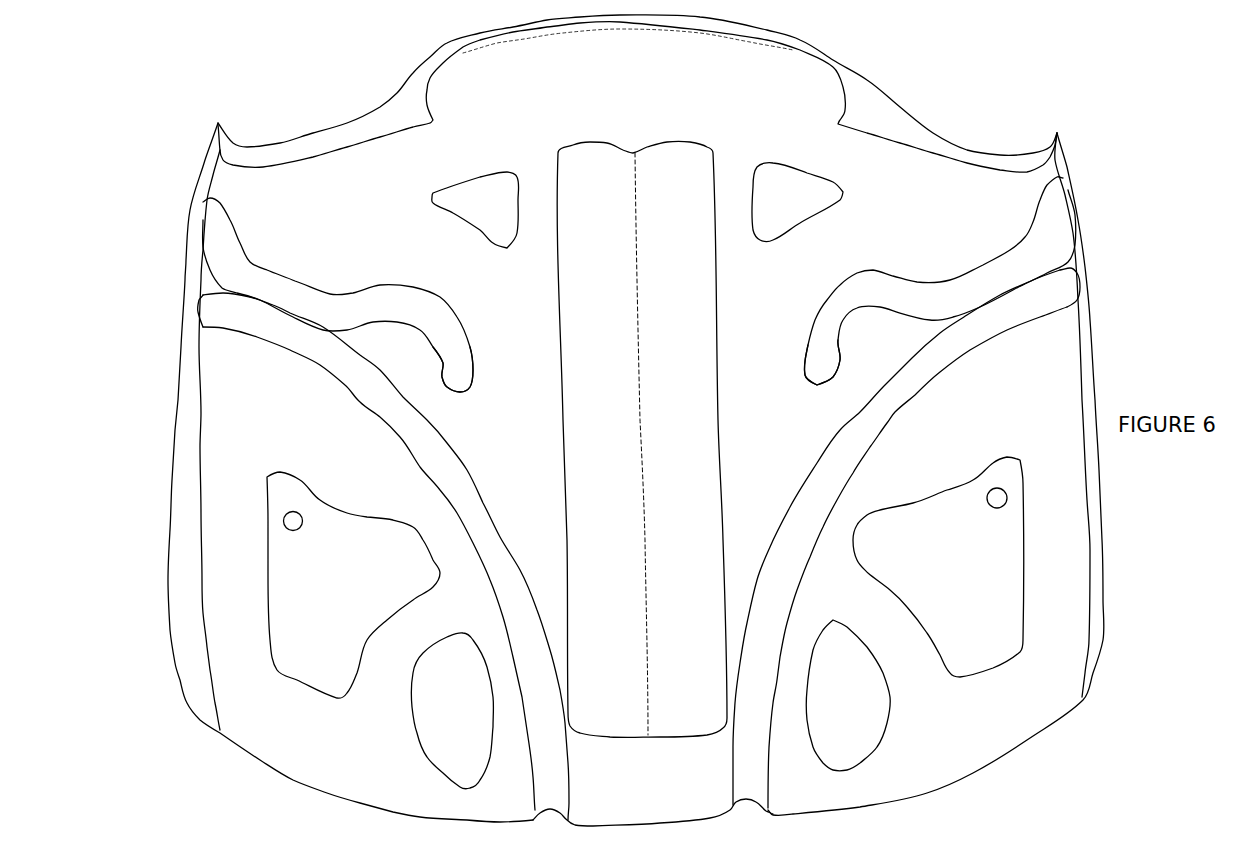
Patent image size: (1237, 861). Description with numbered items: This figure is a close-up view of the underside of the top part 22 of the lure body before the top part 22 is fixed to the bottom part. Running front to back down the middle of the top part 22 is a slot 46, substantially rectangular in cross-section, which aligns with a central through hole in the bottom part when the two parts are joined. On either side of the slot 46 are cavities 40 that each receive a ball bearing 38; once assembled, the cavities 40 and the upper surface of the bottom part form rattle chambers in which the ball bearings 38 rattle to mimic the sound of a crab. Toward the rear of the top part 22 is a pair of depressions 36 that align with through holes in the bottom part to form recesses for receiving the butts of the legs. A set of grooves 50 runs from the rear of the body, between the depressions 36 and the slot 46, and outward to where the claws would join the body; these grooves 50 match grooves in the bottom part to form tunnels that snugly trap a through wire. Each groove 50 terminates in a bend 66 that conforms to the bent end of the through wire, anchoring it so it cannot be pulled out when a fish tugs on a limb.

The top part 22 is at (1100, 707).
The depressions 36 is at (453, 755).
The ball bearings 38 is at (283, 523).
The cavities 40 is at (645, 577).
The slot 46 is at (642, 439).
The grooves 50 is at (218, 236).
The bend 66 is at (460, 355).